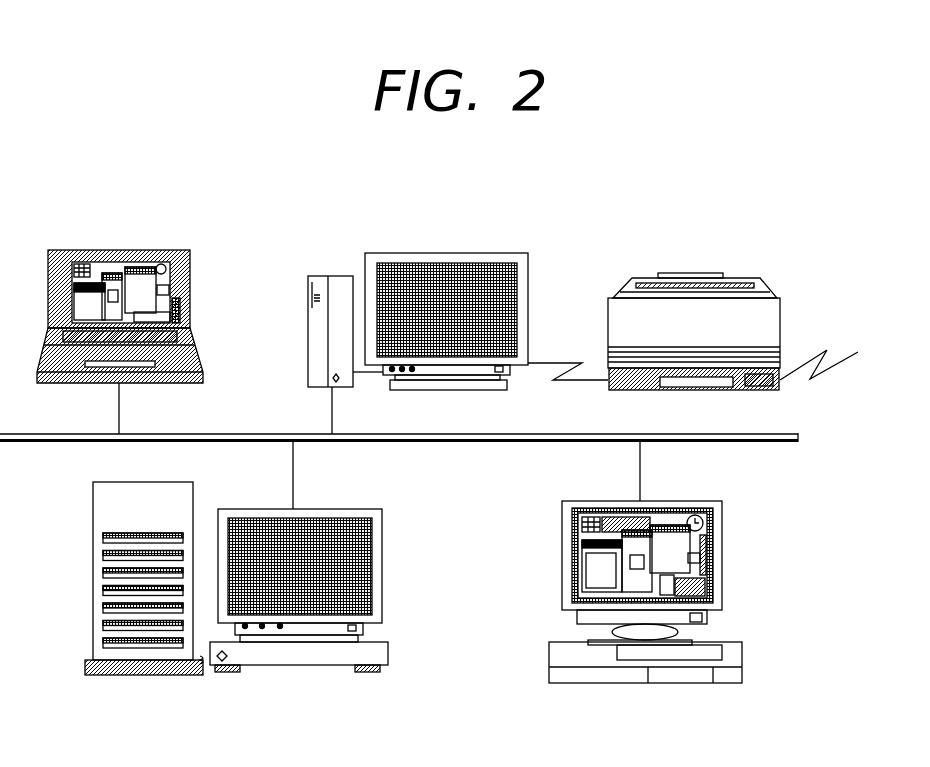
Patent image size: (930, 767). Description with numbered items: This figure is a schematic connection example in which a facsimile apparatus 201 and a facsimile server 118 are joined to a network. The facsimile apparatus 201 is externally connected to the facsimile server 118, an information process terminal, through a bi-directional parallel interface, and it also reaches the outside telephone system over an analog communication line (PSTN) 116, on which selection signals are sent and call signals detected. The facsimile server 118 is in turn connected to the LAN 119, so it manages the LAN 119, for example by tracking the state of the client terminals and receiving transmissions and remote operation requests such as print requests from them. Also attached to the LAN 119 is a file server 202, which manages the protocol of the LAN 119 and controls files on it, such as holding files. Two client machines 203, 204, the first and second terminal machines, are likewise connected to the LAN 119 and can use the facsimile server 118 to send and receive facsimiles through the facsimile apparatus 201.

The analog communication line (PSTN) 116 is at (832, 353).
The facsimile server 118 is at (418, 313).
The LAN 119 is at (402, 469).
The facsimile apparatus 201 is at (679, 313).
The file server 202 is at (149, 609).
The client machine 203 is at (120, 313).
The client machine 204 is at (645, 590).